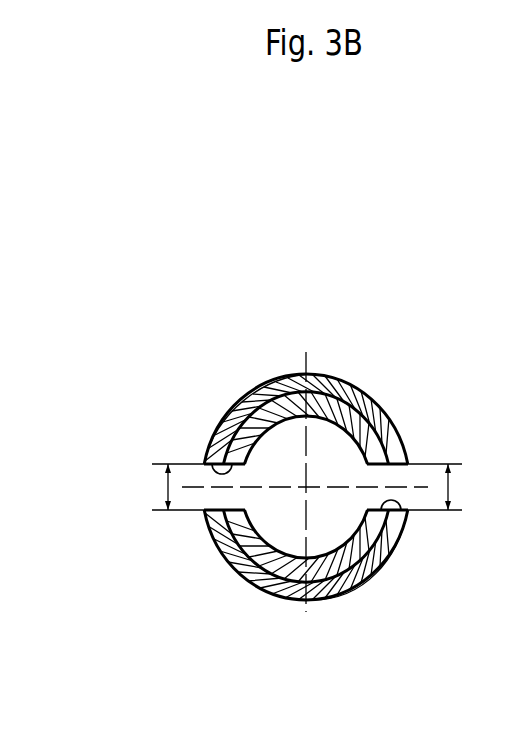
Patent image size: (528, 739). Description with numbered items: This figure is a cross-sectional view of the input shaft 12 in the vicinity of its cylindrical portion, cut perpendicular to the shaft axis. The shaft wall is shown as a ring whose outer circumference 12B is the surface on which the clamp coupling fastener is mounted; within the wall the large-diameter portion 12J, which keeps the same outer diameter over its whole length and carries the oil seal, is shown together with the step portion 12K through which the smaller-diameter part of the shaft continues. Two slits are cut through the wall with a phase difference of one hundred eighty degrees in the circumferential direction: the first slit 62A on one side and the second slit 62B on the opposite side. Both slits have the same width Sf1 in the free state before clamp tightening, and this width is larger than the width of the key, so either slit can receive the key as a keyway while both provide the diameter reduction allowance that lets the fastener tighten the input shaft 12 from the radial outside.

The input shaft 12 is at (376, 396).
The outer circumference 12B is at (279, 372).
The large-diameter portion 12J is at (339, 380).
The step portion 12K is at (388, 430).
The first slit 62A is at (205, 459).
The second slit 62B is at (392, 513).
The width of the slits Sf1 is at (166, 496).